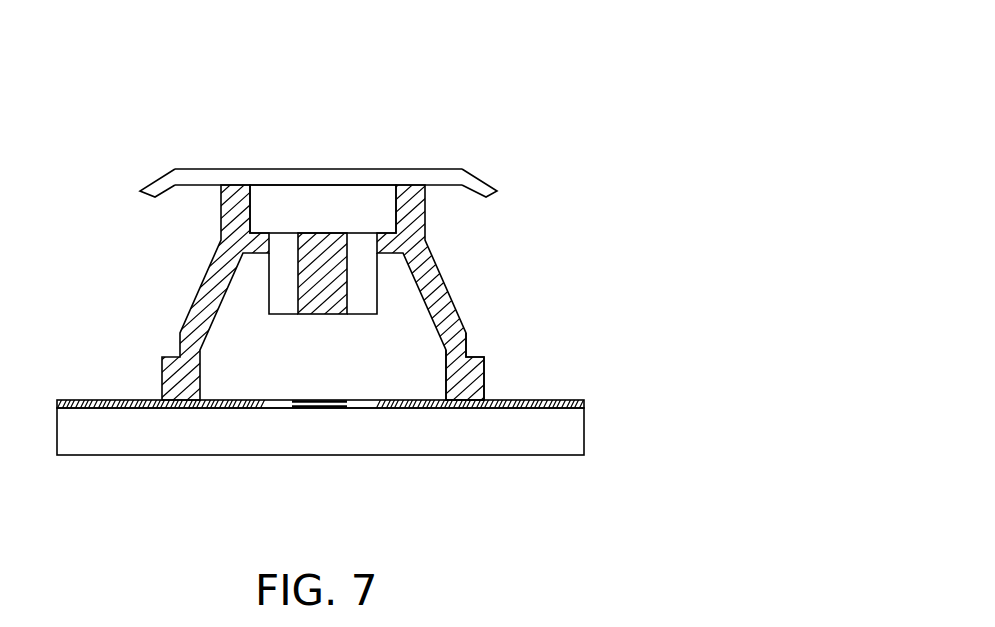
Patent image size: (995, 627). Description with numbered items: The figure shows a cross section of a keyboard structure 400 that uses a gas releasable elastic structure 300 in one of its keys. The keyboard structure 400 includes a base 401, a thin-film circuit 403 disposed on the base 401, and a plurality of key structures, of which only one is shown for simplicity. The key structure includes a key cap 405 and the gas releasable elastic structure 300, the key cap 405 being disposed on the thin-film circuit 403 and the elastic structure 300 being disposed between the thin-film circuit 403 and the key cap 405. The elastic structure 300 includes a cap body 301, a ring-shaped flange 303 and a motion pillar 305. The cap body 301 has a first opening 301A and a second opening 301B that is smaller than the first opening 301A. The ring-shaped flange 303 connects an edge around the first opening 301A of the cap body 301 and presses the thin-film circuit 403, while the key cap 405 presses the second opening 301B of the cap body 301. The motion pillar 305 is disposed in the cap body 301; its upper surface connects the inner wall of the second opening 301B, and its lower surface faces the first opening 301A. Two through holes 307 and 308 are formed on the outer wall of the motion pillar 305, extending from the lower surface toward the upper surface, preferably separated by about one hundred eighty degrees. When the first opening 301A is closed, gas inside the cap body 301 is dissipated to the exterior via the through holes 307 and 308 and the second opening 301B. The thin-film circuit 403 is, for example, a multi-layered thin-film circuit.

The keyboard structure 400 is at (565, 77).
The gas releasable elastic structure 300 is at (497, 313).
The cap body 301 is at (435, 273).
The first opening 301A is at (327, 380).
The second opening 301B is at (296, 193).
The ring-shaped flange 303 is at (483, 363).
The motion pillar 305 is at (328, 245).
The through hole 307 is at (280, 303).
The through hole 308 is at (366, 303).
The base 401 is at (577, 445).
The thin-film circuit 403 is at (583, 401).
The key cap 405 is at (470, 180).